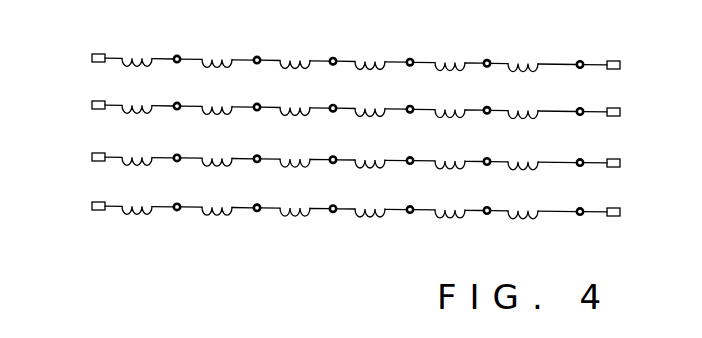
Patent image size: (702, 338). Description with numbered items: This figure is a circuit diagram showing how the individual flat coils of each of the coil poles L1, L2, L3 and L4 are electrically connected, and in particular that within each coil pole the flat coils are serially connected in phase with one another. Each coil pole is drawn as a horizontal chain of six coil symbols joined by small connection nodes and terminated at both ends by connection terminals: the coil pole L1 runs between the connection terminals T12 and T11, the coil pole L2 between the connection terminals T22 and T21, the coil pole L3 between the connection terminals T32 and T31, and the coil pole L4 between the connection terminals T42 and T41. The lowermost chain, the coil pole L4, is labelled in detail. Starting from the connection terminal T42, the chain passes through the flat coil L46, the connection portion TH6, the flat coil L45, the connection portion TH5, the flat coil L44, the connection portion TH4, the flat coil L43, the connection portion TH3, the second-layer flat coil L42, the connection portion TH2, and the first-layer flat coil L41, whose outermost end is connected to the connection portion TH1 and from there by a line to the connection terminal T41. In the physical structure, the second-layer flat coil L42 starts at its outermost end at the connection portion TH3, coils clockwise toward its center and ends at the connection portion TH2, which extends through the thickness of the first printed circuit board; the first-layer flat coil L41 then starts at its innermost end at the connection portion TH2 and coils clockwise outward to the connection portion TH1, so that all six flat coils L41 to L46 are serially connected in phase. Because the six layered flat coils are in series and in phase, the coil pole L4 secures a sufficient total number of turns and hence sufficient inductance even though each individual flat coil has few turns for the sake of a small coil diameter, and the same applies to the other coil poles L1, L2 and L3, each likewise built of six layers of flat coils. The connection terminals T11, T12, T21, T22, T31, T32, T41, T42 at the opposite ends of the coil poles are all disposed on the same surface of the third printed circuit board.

The coil pole L1 is at (317, 59).
The coil pole L2 is at (317, 106).
The coil pole L3 is at (317, 157).
The coil pole L4 is at (317, 206).
The connection terminal T11 is at (614, 62).
The connection terminal T12 is at (100, 54).
The connection terminal T21 is at (618, 97).
The connection terminal T22 is at (98, 103).
The connection terminal T31 is at (613, 156).
The connection terminal T32 is at (94, 152).
The connection terminal T41 is at (612, 205).
The connection terminal T42 is at (97, 202).
The connection portion TH1 is at (578, 199).
The connection portion TH2 is at (483, 198).
The connection portion TH3 is at (406, 198).
The connection portion TH4 is at (328, 197).
The connection portion TH5 is at (251, 197).
The connection portion TH6 is at (173, 196).
The first-layer flat coil L41 is at (522, 226).
The second-layer flat coil L42 is at (451, 226).
The flat coil L43 is at (374, 225).
The flat coil L44 is at (290, 225).
The flat coil L45 is at (211, 224).
The flat coil L46 is at (132, 224).